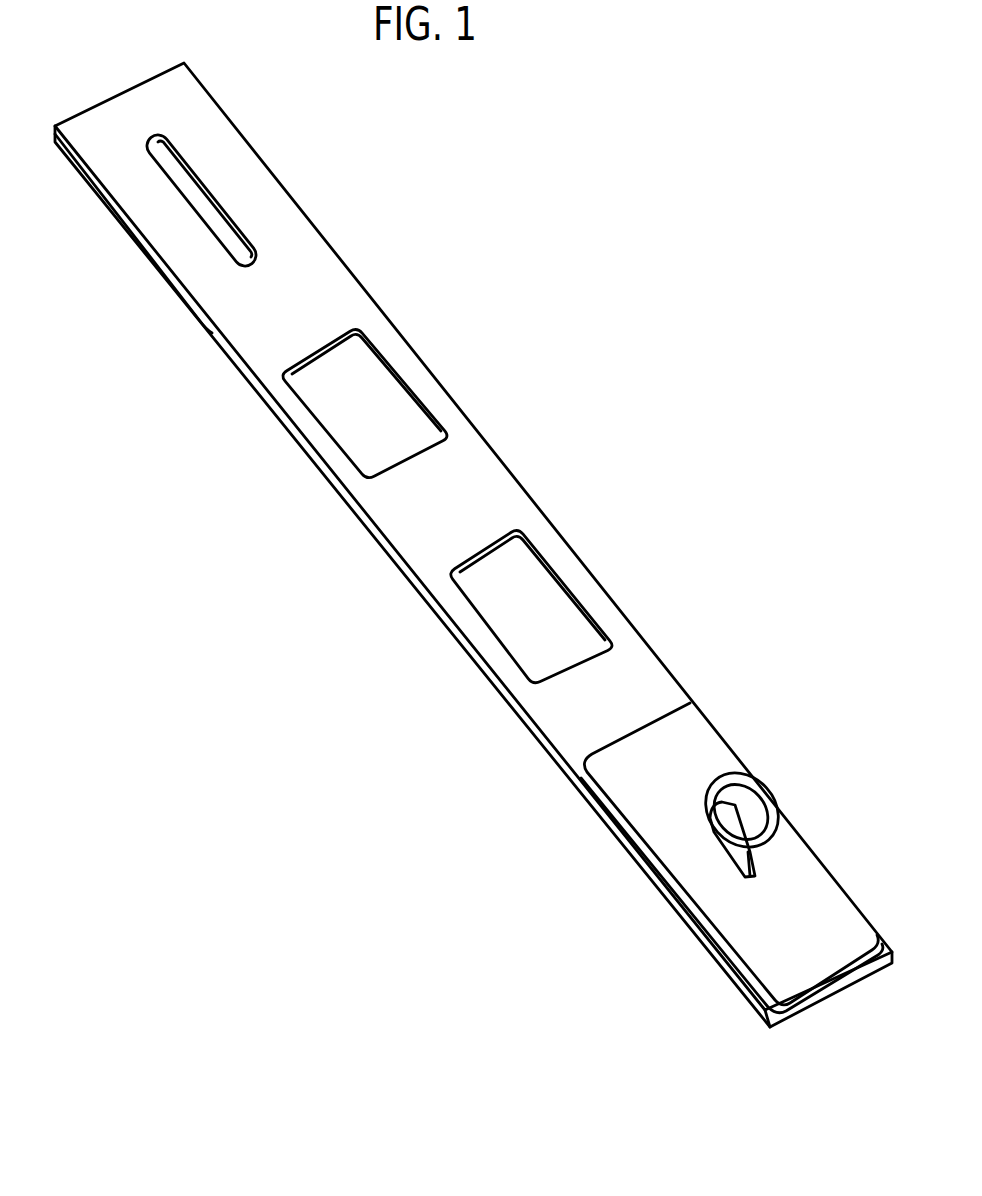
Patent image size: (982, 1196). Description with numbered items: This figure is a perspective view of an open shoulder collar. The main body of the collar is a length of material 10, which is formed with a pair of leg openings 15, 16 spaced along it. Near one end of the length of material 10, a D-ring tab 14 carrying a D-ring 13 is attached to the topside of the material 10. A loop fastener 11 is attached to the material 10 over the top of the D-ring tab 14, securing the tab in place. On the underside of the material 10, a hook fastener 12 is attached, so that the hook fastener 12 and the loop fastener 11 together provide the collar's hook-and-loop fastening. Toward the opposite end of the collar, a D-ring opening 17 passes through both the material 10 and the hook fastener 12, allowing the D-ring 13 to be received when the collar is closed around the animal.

The length of material 10 is at (487, 443).
The loop fastener 11 is at (627, 783).
The hook fastener 12 is at (170, 298).
The D-ring 13 is at (712, 776).
The D-ring tab 14 is at (730, 835).
The leg opening 15 is at (370, 438).
The leg opening 16 is at (477, 577).
The D-ring opening 17 is at (215, 202).